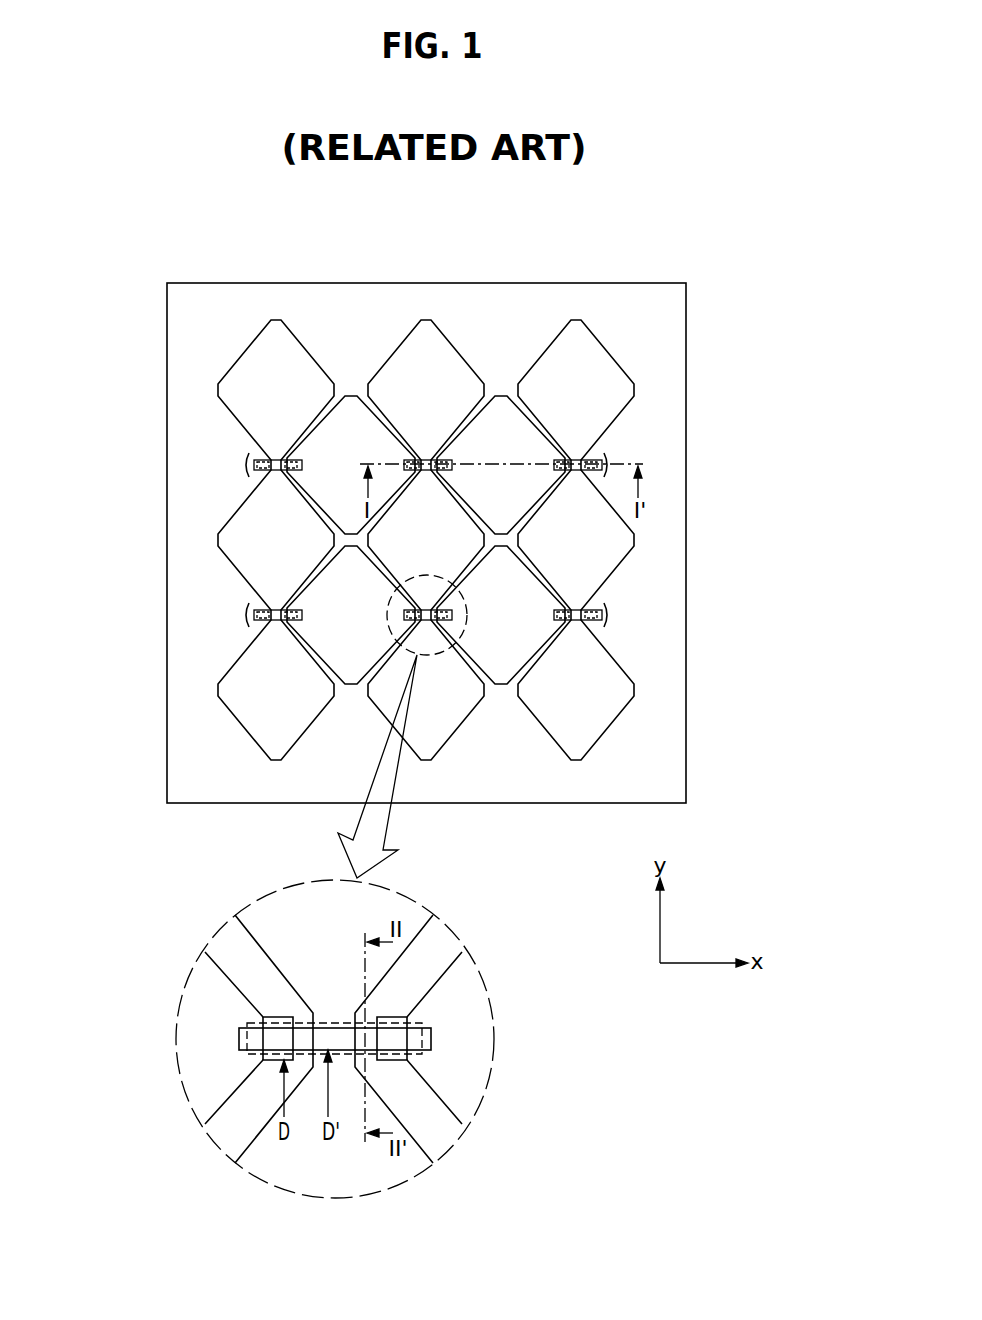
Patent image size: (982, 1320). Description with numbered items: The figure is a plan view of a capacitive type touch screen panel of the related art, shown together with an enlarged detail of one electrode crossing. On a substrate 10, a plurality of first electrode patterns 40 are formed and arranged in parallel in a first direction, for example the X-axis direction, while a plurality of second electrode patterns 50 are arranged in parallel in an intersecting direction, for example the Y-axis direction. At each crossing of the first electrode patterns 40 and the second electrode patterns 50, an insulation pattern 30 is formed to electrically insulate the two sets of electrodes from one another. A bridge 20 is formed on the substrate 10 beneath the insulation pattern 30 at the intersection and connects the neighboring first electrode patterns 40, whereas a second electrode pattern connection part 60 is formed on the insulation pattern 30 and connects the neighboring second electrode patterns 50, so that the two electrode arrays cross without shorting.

The substrate 10 is at (190, 762).
The bridge 20 is at (431, 1038).
The insulation pattern 30 is at (270, 610).
The first electrode pattern 40 is at (340, 585).
The second electrode pattern 50 is at (276, 340).
The second electrode pattern connection part 60 is at (275, 456).